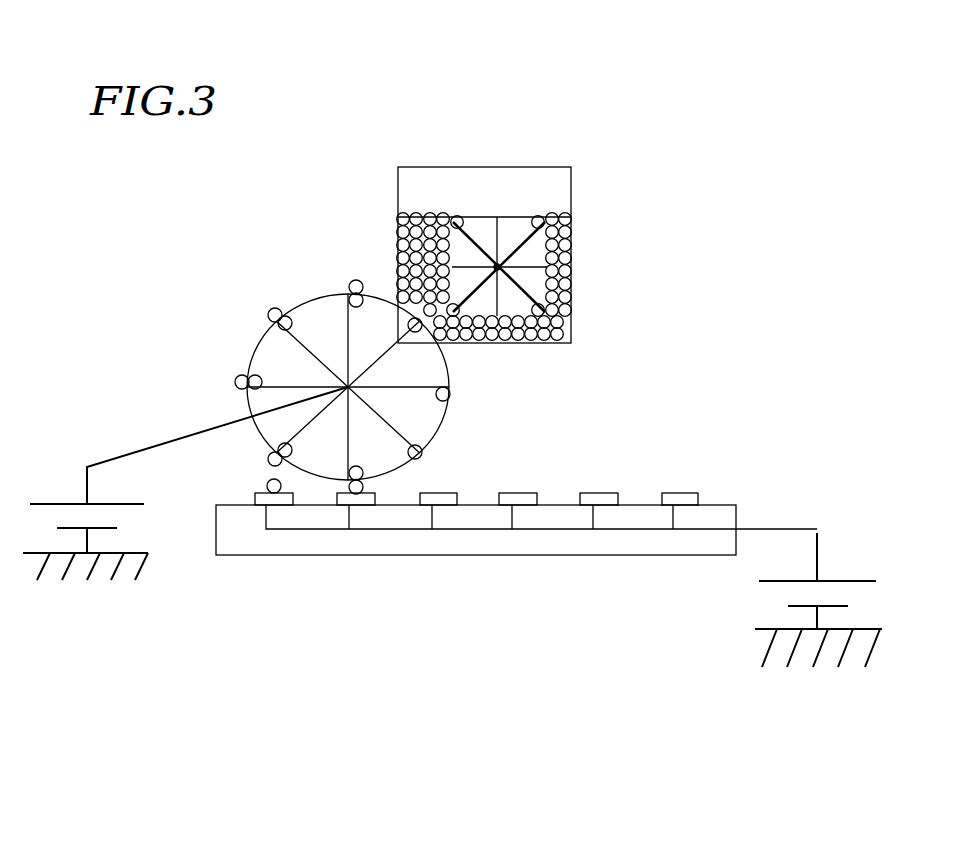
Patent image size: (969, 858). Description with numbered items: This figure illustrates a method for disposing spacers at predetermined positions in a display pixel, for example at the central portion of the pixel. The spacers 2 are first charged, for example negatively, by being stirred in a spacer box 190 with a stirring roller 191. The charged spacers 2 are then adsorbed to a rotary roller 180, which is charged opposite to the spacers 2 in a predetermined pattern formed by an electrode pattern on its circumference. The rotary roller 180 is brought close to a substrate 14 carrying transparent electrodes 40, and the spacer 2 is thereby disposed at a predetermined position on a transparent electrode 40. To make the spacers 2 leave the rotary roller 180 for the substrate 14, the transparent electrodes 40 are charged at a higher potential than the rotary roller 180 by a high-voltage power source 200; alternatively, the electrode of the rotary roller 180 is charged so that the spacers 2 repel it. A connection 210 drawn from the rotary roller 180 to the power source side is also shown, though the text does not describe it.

The spacer 2 is at (405, 248).
The substrate 14 is at (377, 557).
The transparent electrode 40 is at (610, 493).
The rotary roller 180 is at (318, 320).
The spacer box 190 is at (553, 167).
The stirring roller 191 is at (528, 267).
The high-voltage power source 200 is at (117, 590).
The electrode wire 210 is at (253, 367).